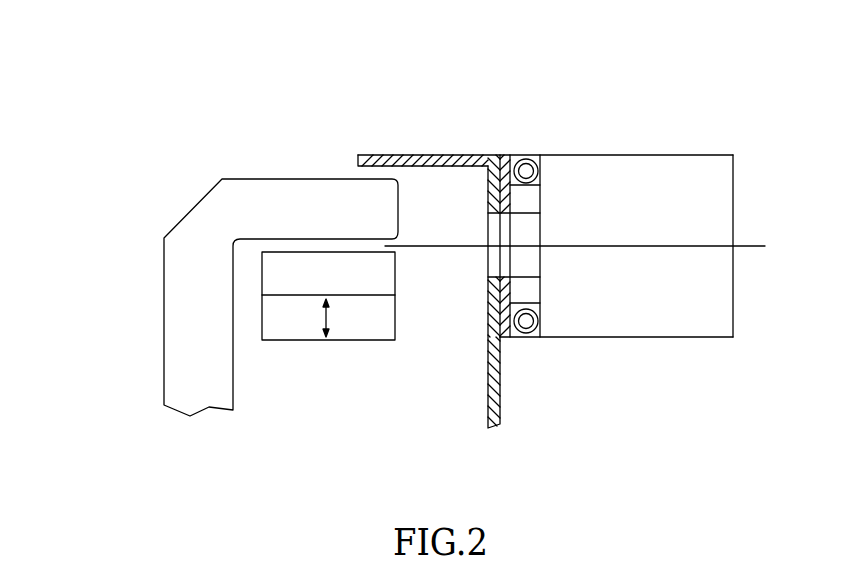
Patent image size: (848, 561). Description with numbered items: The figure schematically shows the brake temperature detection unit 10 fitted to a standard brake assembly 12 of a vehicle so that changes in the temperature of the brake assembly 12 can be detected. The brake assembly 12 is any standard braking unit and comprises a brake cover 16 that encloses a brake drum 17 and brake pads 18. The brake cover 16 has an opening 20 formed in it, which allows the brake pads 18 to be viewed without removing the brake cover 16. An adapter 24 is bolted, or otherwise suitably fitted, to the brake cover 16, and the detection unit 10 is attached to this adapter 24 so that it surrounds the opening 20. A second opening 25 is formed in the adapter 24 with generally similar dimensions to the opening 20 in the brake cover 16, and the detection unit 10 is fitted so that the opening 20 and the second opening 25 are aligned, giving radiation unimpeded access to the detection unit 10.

The brake temperature detection unit 10 is at (640, 185).
The brake assembly 12 is at (277, 108).
The brake cover 16 is at (430, 153).
The brake drum 17 is at (175, 345).
The brake pads 18 is at (395, 272).
The opening 20 is at (488, 262).
The adapter 24 is at (500, 157).
The second opening 25 is at (512, 262).